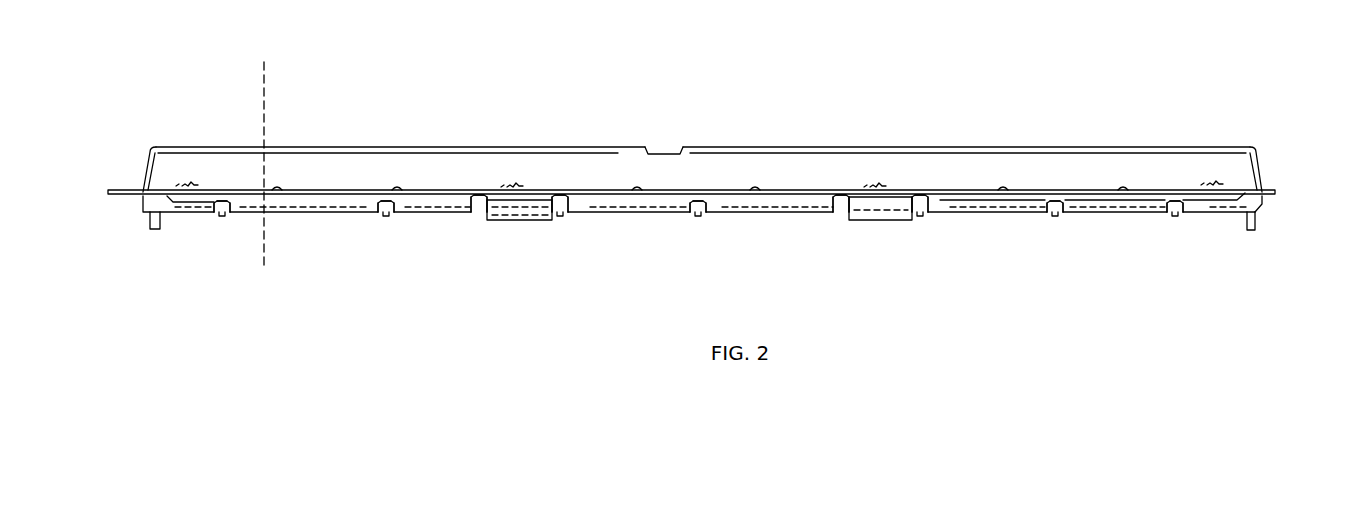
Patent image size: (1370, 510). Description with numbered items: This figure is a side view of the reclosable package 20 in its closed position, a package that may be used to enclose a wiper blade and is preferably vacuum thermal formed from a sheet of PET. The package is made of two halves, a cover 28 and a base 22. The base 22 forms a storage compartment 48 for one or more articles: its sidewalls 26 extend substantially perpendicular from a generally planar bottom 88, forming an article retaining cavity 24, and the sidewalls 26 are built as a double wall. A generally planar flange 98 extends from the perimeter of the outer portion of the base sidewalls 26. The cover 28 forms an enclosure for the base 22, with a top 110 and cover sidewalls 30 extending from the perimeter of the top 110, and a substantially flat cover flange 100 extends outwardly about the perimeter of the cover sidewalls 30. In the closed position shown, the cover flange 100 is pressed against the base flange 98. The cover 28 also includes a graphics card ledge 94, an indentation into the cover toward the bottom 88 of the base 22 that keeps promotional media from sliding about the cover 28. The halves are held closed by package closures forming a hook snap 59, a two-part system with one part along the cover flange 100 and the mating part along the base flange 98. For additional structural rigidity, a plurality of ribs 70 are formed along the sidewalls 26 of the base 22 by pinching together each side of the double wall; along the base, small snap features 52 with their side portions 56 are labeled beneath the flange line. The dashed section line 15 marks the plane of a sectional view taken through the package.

The reclosable package 20 is at (133, 103).
The section line 15- 15 is at (263, 55).
The base 22 is at (126, 257).
The article retaining cavity 24 is at (762, 213).
The sidewalls 26 is at (148, 207).
The cover 28 is at (136, 168).
The cover sidewalls 30 is at (147, 175).
The storage compartment 48 is at (602, 203).
The snap feature 52 is at (222, 210).
The side wall of snap feature 56 is at (233, 207).
The hook snap 59 is at (193, 175).
The ribs 70 is at (222, 203).
The bottom 88 is at (975, 213).
The graphics card ledge 94 is at (655, 147).
The flange 98 is at (1262, 200).
The cover flange 100 is at (1265, 192).
The top 110 is at (302, 148).